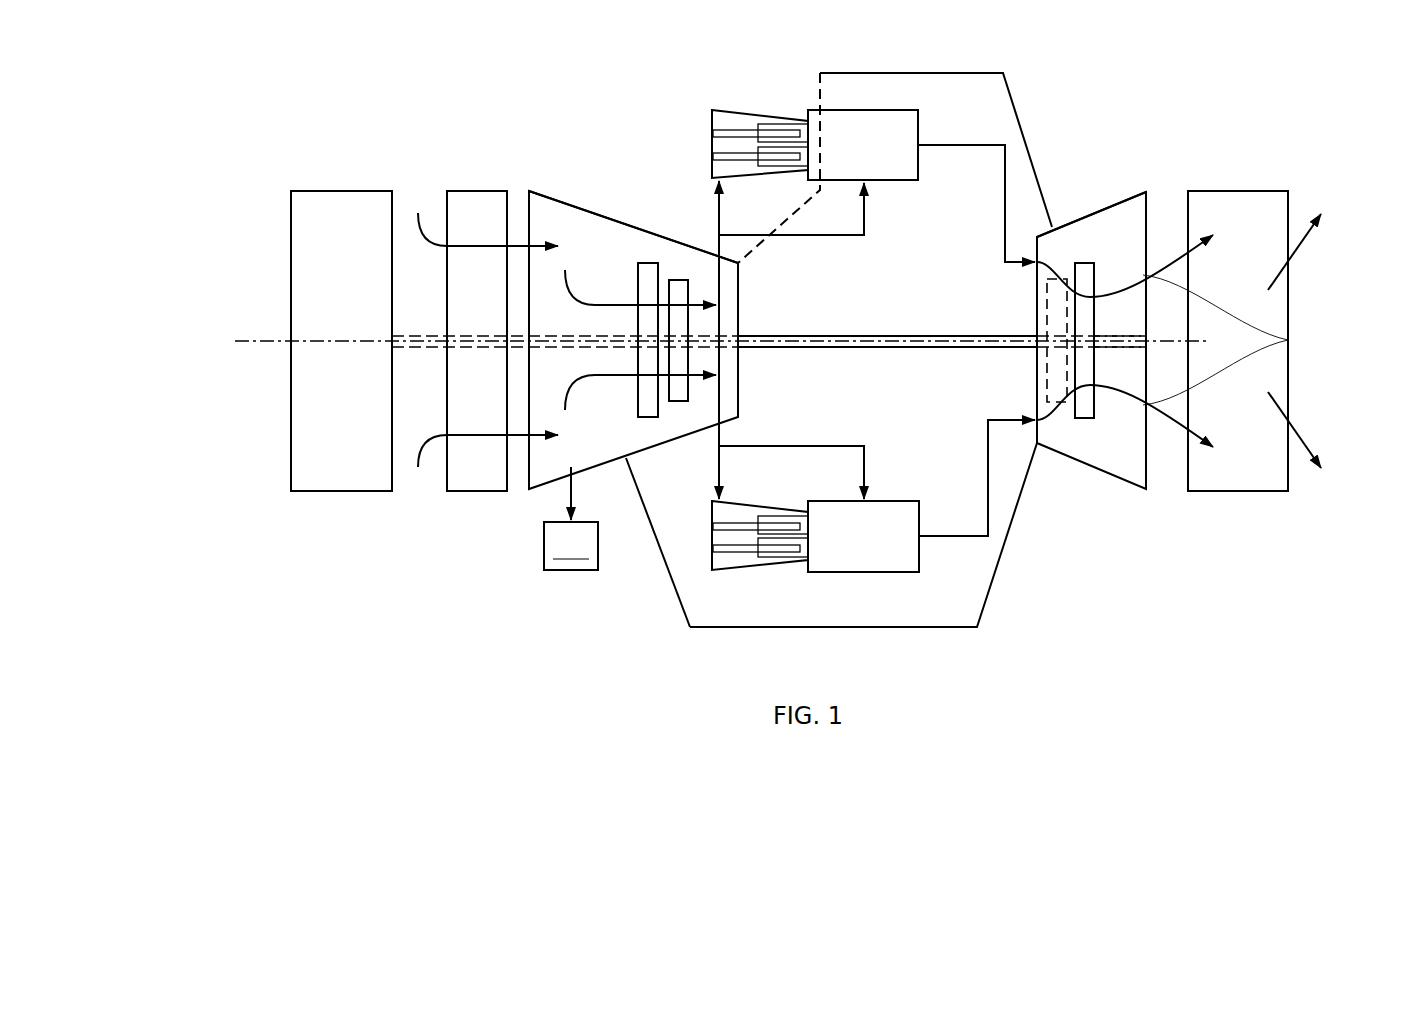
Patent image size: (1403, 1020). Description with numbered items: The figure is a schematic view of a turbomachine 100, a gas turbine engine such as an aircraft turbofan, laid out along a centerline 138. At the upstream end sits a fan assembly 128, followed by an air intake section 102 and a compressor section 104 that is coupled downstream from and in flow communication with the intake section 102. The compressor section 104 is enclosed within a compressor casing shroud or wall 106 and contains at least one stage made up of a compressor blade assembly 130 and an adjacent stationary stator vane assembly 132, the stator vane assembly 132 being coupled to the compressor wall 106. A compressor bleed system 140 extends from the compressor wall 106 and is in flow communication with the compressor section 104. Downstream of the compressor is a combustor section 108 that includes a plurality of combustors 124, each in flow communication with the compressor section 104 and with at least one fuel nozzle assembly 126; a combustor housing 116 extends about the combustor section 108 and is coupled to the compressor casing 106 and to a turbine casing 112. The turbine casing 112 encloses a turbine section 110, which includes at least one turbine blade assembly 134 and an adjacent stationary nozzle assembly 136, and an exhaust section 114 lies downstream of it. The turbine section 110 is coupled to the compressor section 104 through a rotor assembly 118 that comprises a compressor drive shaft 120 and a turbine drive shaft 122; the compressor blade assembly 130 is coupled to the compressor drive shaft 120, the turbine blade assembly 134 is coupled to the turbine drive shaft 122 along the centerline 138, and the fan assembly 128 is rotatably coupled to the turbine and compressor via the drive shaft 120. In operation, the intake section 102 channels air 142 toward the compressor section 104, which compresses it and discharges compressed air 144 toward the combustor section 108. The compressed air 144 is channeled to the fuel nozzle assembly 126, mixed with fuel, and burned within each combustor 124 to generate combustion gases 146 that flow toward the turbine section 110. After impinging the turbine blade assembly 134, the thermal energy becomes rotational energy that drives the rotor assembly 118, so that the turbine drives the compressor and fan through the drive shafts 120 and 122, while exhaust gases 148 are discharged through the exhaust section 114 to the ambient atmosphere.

The turbomachine 100 is at (327, 48).
The air intake section 102 is at (477, 191).
The compressor section 104 is at (537, 185).
The compressor casing shroud or wall 106 is at (607, 217).
The combustor section 108 is at (1089, 82).
The turbine section 110 is at (1127, 190).
The turbine casing 112 is at (1073, 218).
The exhaust section 114 is at (1238, 191).
The combustor housing 116 is at (960, 73).
The rotor assembly 118 is at (837, 325).
The compressor rotor or drive shaft 120 is at (568, 350).
The turbine rotor or drive shaft 122 is at (1110, 343).
The combustor 124 is at (858, 110).
The fuel nozzle assembly 126 is at (737, 124).
The fan assembly 128 is at (363, 191).
The compressor blade assembly 130 is at (645, 425).
The stator vane assembly 132 is at (678, 405).
The turbine blade assembly 134 is at (1063, 402).
The stationary nozzle assembly 136 is at (1085, 418).
The centerline 138 is at (265, 340).
The compressor bleed system 140 is at (571, 518).
The air 142 is at (418, 213).
The compressed air 144 is at (613, 304).
The combustion gases 146 is at (1288, 340).
The exhaust gases 148 is at (1294, 255).